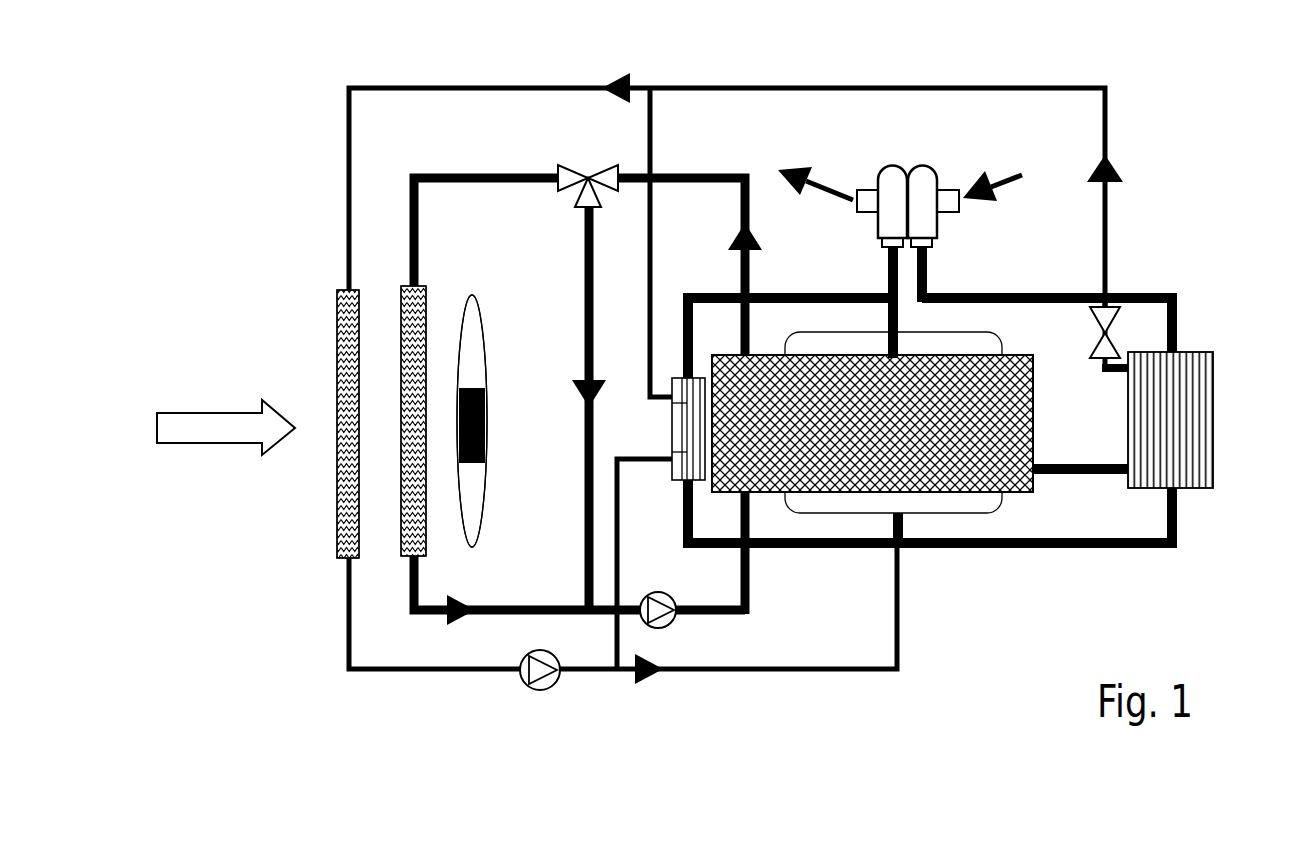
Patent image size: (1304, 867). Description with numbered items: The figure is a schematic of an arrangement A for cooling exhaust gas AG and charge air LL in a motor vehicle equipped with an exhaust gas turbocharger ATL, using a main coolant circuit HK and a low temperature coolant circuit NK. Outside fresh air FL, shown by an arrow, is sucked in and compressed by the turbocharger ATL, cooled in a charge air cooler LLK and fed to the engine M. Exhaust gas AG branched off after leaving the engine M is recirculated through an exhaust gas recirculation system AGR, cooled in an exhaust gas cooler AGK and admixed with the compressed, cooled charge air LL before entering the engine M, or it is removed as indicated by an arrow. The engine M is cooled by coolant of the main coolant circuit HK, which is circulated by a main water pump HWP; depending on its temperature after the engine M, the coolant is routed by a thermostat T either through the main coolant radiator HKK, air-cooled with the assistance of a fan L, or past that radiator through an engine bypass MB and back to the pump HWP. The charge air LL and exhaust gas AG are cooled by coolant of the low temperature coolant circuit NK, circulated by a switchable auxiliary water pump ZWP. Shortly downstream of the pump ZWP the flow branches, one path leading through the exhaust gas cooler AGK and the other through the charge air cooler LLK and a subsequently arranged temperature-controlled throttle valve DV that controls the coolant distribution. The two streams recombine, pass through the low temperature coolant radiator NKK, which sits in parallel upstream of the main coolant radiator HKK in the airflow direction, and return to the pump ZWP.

The arrangement for cooling recirculated exhaust gas and charge air A is at (1152, 154).
The low temperature coolant circuit NK is at (538, 87).
The main coolant circuit HK is at (727, 173).
The engine bypass MB is at (583, 463).
The main coolant radiator HKK is at (403, 450).
The low temperature coolant radiator NKK is at (337, 348).
The fan L is at (482, 307).
The thermostat T is at (592, 170).
The charge air LL is at (1152, 547).
The exhaust gas recirculation system AGR is at (842, 552).
The engine M is at (797, 395).
The exhaust gas cooler AGK is at (677, 483).
The exhaust gas turbocharger ATL is at (920, 187).
The exhaust gas AG is at (828, 190).
The fresh air FL is at (1000, 175).
The throttle valve DV is at (1112, 303).
The charge air cooler LLK is at (1198, 487).
The auxiliary water pump ZWP is at (529, 675).
The main water pump HWP is at (665, 626).